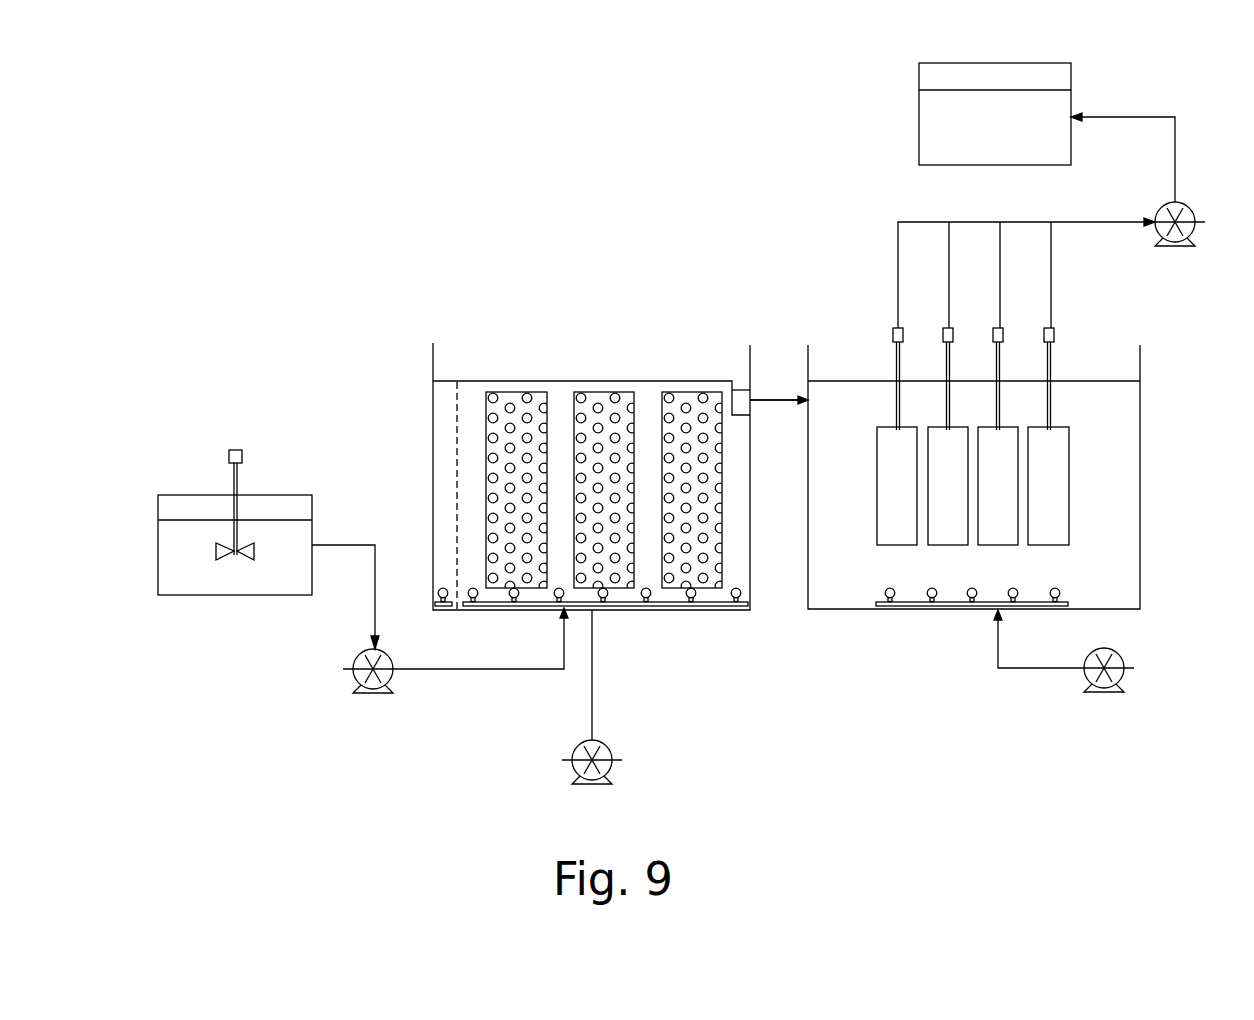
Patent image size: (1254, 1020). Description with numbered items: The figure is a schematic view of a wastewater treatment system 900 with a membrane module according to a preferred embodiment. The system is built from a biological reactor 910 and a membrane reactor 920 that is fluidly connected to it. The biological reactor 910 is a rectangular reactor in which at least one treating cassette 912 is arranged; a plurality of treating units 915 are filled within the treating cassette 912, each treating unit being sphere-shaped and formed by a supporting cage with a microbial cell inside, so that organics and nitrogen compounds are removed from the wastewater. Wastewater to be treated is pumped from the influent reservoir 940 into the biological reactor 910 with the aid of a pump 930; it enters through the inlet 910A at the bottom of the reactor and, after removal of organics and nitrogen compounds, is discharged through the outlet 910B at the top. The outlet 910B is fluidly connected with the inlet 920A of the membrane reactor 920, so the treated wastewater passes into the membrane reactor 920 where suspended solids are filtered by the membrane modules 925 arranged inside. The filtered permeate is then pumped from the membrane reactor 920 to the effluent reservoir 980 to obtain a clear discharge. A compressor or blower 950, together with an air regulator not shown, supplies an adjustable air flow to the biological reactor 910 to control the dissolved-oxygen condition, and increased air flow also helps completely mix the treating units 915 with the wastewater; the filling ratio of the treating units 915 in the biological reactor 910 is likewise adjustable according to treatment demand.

The wastewater treatment system 900 is at (180, 212).
The biological reactor 910 is at (433, 428).
The inlet 910A is at (485, 640).
The outlet 910B is at (779, 393).
The treating cassette 912 is at (507, 395).
The treating units 915 is at (528, 397).
The membrane reactor 920 is at (1140, 525).
The inlet 920A is at (777, 412).
The membrane module 925 is at (1053, 493).
The pump 930 is at (360, 653).
The influent reservoir 940 is at (168, 516).
The compressor or blower 950 is at (578, 746).
The effluent reservoir 980 is at (1045, 68).